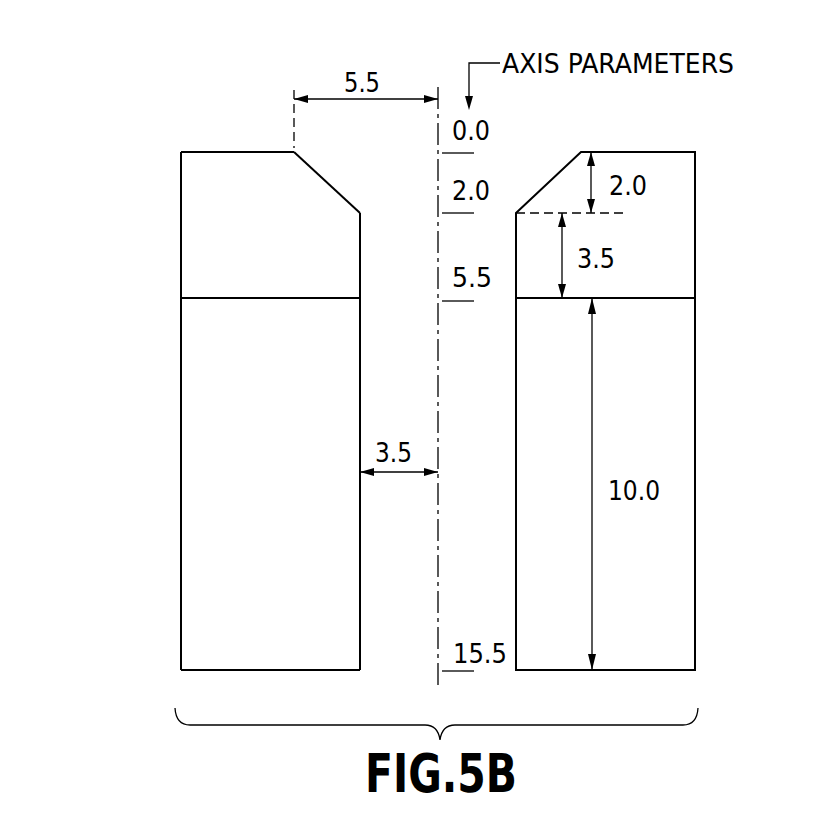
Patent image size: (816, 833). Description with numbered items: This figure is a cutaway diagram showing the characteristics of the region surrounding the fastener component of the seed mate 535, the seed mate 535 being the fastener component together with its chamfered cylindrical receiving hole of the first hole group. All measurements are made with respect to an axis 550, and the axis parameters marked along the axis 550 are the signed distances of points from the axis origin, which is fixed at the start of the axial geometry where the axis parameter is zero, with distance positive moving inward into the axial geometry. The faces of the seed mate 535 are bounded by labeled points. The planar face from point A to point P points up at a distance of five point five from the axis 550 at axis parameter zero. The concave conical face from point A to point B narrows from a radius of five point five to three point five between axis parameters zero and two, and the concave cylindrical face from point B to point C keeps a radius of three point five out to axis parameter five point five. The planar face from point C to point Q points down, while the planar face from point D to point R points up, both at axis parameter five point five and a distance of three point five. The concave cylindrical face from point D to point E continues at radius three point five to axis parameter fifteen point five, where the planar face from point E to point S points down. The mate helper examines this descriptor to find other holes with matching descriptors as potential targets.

The seed mate 535 is at (210, 367).
The axis 550 is at (437, 97).
The point P is at (220, 158).
The point Q is at (253, 283).
The point R is at (253, 318).
The point S is at (253, 651).
The point A is at (318, 182).
The point B is at (343, 252).
The point C is at (330, 280).
The point D is at (346, 484).
The point E is at (330, 650).